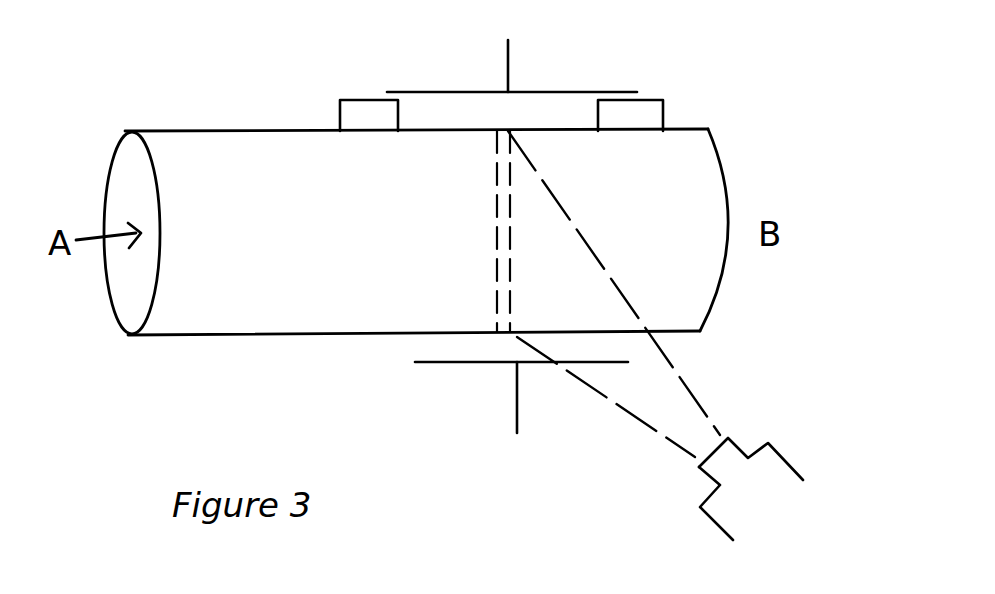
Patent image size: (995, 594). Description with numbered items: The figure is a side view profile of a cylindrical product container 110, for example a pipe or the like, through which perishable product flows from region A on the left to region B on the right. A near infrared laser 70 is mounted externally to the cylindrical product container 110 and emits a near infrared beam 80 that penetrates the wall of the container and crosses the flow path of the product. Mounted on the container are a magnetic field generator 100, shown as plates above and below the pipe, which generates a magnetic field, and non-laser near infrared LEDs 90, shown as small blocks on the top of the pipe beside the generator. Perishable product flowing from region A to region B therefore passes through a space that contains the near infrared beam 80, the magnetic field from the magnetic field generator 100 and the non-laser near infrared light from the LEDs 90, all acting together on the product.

The cylindrical product container 110 is at (742, 121).
The non-laser near infrared LEDs 90 is at (356, 114).
The magnetic field generator 100 is at (572, 92).
The near infrared beam 80 is at (688, 382).
The near infrared laser 70 is at (765, 467).